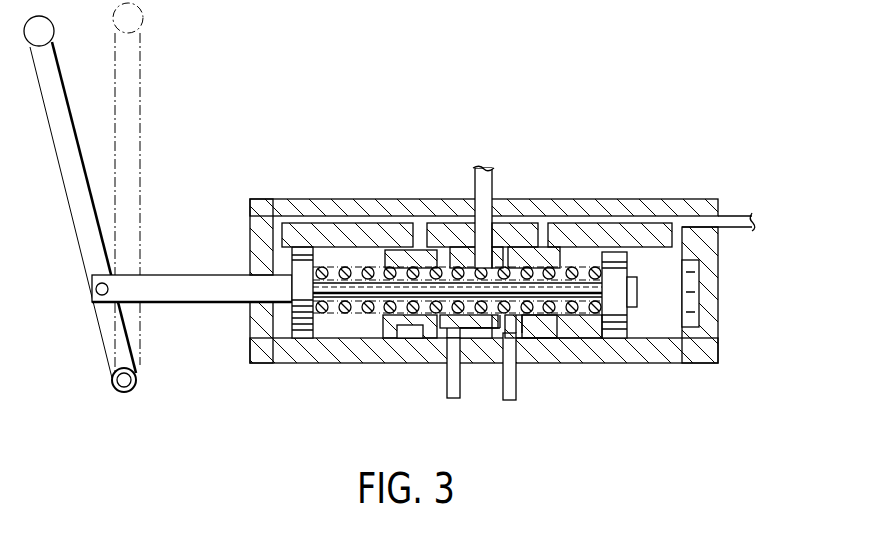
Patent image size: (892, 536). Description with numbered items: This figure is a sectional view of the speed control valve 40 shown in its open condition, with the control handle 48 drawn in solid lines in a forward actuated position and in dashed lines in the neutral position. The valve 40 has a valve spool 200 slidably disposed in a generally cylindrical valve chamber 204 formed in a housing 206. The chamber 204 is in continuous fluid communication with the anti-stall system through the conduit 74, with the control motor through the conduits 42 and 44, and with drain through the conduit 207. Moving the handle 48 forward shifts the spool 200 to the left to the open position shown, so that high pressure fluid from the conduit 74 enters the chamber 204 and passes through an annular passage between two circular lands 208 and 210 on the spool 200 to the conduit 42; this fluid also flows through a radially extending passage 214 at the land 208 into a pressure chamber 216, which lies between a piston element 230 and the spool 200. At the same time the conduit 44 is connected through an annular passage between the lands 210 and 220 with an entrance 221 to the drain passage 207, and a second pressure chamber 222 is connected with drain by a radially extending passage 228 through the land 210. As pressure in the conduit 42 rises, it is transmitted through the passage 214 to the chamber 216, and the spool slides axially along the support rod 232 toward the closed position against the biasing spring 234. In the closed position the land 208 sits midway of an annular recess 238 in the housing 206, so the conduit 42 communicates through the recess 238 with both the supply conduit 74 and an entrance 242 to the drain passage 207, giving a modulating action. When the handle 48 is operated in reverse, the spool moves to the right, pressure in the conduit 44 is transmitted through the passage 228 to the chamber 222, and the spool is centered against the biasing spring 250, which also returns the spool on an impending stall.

The speed control valve 40 is at (764, 96).
The conduit 42 is at (451, 398).
The conduit 44 is at (506, 400).
The control handle 48 is at (113, 127).
The conduit 74 is at (492, 182).
The valve spool 200 is at (370, 343).
The valve chamber 204 is at (658, 336).
The housing 206 is at (248, 206).
The conduit 207 is at (732, 219).
The circular land 208 is at (420, 337).
The circular land 210 is at (520, 334).
The radially extending passage 214 is at (397, 343).
The pressure chamber 216 is at (318, 254).
The land 220 is at (560, 343).
The entrance 221 is at (542, 245).
The pressure chamber 222 is at (570, 256).
The radially extending passage 228 is at (495, 334).
The piston element 230 is at (296, 322).
The support rod 232 is at (593, 292).
The biasing spring 234 is at (610, 236).
The annular recess 238 is at (440, 350).
The entrance 242 is at (418, 226).
The biasing spring 250 is at (347, 236).